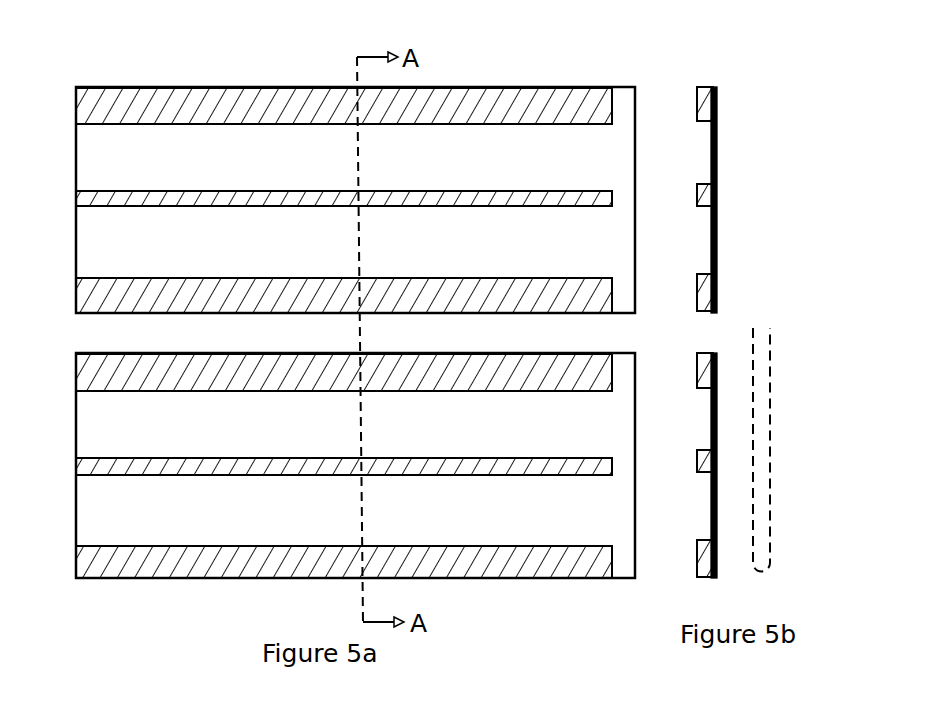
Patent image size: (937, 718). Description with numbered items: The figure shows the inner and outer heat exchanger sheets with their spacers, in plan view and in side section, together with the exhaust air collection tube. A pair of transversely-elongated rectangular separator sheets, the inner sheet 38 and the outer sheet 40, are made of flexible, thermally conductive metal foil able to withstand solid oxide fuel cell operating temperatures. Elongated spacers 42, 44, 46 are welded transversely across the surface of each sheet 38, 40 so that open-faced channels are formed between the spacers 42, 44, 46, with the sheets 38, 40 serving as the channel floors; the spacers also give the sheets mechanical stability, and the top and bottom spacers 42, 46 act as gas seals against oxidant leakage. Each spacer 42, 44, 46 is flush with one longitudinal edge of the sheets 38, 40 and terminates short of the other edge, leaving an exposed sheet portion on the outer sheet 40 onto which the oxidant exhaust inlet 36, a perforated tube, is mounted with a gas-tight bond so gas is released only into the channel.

In FIG. 5B, the oxidant exhaust inlet 36 is at (773, 342).
In FIG. 5A, the inner separator sheet 38 is at (95, 240).
In FIG. 5B, the inner separator sheet 38 is at (637, 140).
In FIG. 5A, the outer separator sheet 40 is at (95, 500).
In FIG. 5A, the top spacer 42 is at (55, 375).
In FIG. 5B, the top spacer 42 is at (703, 87).
In FIG. 5A, the intermediate spacer 44 is at (95, 193).
In FIG. 5B, the intermediate spacer 44 is at (713, 197).
In FIG. 5A, the bottom spacer 46 is at (95, 292).
In FIG. 5B, the bottom spacer 46 is at (712, 292).